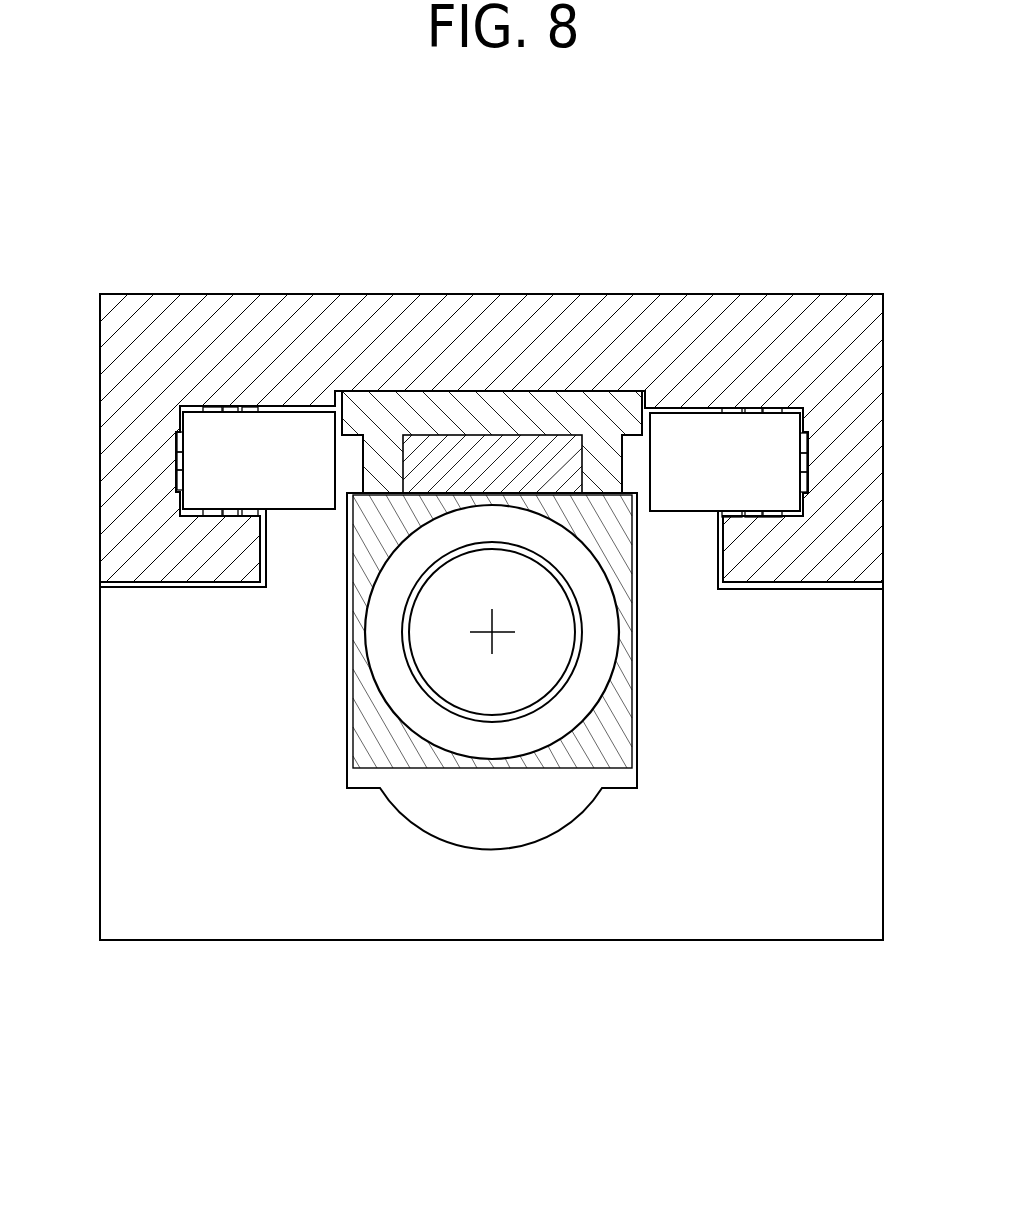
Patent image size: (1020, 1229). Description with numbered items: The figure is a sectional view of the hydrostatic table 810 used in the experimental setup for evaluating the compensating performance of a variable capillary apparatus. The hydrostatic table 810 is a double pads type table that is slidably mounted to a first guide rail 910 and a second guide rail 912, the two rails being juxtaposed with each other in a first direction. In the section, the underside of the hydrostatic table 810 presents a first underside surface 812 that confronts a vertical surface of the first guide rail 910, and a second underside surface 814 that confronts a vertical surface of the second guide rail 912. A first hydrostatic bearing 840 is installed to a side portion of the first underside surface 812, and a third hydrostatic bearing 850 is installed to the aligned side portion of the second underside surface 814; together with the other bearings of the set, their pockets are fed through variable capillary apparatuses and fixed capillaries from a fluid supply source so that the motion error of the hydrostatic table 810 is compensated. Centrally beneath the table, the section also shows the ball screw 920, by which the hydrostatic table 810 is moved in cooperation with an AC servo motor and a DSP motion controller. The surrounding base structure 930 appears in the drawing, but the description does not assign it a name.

The hydrostatic table 810 is at (430, 330).
The first underside surface 812 is at (741, 353).
The second underside surface 814 is at (239, 352).
The first hydrostatic bearing 840 is at (818, 445).
The third hydrostatic bearing 850 is at (170, 453).
The first guide rail 910 is at (703, 442).
The second guide rail 912 is at (282, 440).
The ball screw 920 is at (599, 617).
The base 930 is at (748, 905).